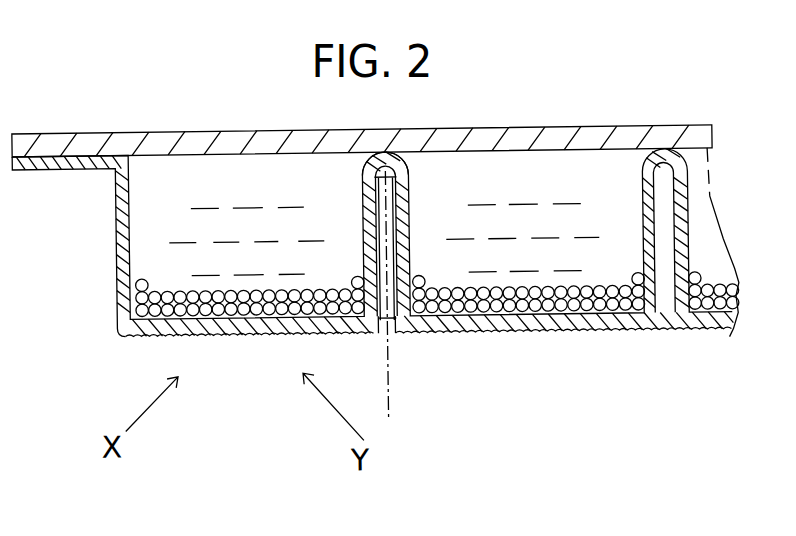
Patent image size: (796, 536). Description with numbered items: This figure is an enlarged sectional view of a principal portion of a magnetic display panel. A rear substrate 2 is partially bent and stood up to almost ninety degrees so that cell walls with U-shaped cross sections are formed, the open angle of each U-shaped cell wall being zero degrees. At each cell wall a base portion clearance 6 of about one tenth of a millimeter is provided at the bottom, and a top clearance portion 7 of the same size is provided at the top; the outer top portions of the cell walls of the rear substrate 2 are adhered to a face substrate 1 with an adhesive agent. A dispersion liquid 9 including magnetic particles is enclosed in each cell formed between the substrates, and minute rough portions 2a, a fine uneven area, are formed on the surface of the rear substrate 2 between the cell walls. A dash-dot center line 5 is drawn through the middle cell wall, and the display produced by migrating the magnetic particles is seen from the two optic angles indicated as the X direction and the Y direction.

The face substrate 1 is at (545, 144).
The rear substrate 2 is at (376, 250).
The minute rough portions 2a is at (253, 346).
The center axis 5 is at (392, 418).
The base portion clearance 6 is at (390, 345).
The top clearance portion 7 is at (392, 161).
The dispersion liquid 9 is at (157, 217).